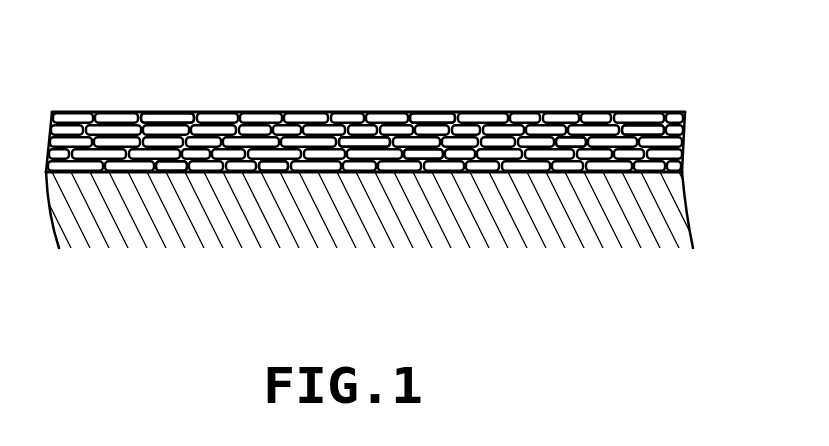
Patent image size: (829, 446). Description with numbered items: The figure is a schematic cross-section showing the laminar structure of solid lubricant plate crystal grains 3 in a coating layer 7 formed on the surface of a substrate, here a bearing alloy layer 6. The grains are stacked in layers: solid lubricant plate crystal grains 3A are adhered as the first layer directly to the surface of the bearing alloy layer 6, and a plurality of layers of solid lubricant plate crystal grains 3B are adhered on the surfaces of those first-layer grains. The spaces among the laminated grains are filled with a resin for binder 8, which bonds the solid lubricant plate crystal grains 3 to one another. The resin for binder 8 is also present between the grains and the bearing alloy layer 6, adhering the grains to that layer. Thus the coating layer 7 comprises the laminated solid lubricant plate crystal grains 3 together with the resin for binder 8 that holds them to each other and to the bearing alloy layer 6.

The solid lubricant plate crystal grains 3 is at (638, 127).
The solid lubricant plate crystal grains adhered as the first layer 3A is at (269, 165).
The solid lubricant plate crystal grains in a plurality of layers 3B is at (405, 157).
The bearing alloy layer 6 is at (697, 204).
The coating layer 7 is at (689, 146).
The resin for binder 8 is at (160, 125).